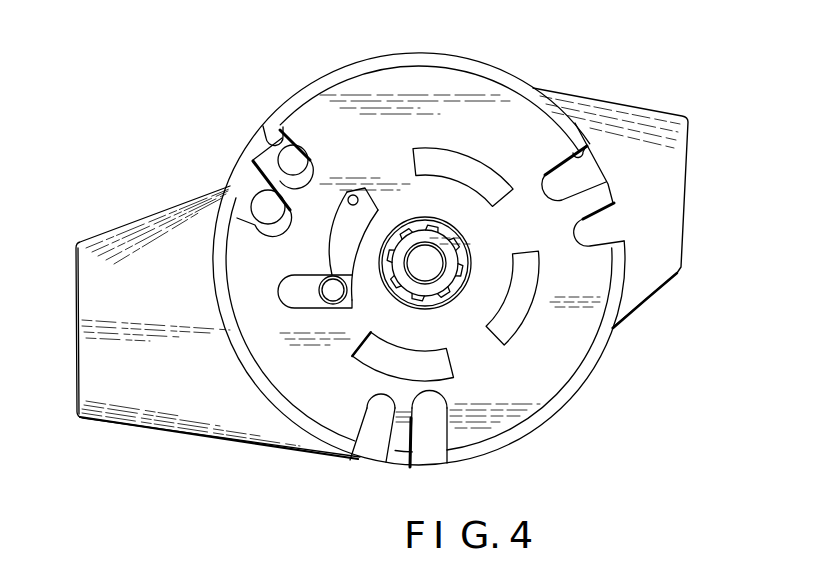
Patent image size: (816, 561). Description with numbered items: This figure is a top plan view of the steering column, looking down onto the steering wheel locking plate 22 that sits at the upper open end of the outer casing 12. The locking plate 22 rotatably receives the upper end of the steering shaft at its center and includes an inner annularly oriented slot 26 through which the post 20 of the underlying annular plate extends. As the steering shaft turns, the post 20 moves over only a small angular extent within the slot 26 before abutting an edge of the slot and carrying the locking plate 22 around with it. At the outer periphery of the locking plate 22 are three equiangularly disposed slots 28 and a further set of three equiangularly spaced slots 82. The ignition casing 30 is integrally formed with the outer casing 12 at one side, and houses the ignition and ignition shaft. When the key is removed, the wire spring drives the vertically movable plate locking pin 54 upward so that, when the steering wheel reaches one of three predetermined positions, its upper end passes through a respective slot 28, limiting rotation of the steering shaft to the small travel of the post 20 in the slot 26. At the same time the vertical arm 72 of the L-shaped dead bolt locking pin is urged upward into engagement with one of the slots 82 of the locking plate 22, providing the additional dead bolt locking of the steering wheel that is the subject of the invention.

The outer casing 12 is at (343, 66).
The steering wheel locking plate 22 is at (450, 82).
The post 20 is at (318, 306).
The inner annularly oriented slot 26 is at (349, 195).
The slots 28 is at (585, 147).
The ignition casing 30 is at (645, 278).
The plate locking pin 54 is at (266, 216).
The vertical arm 72 is at (296, 155).
The slots 82 is at (277, 138).